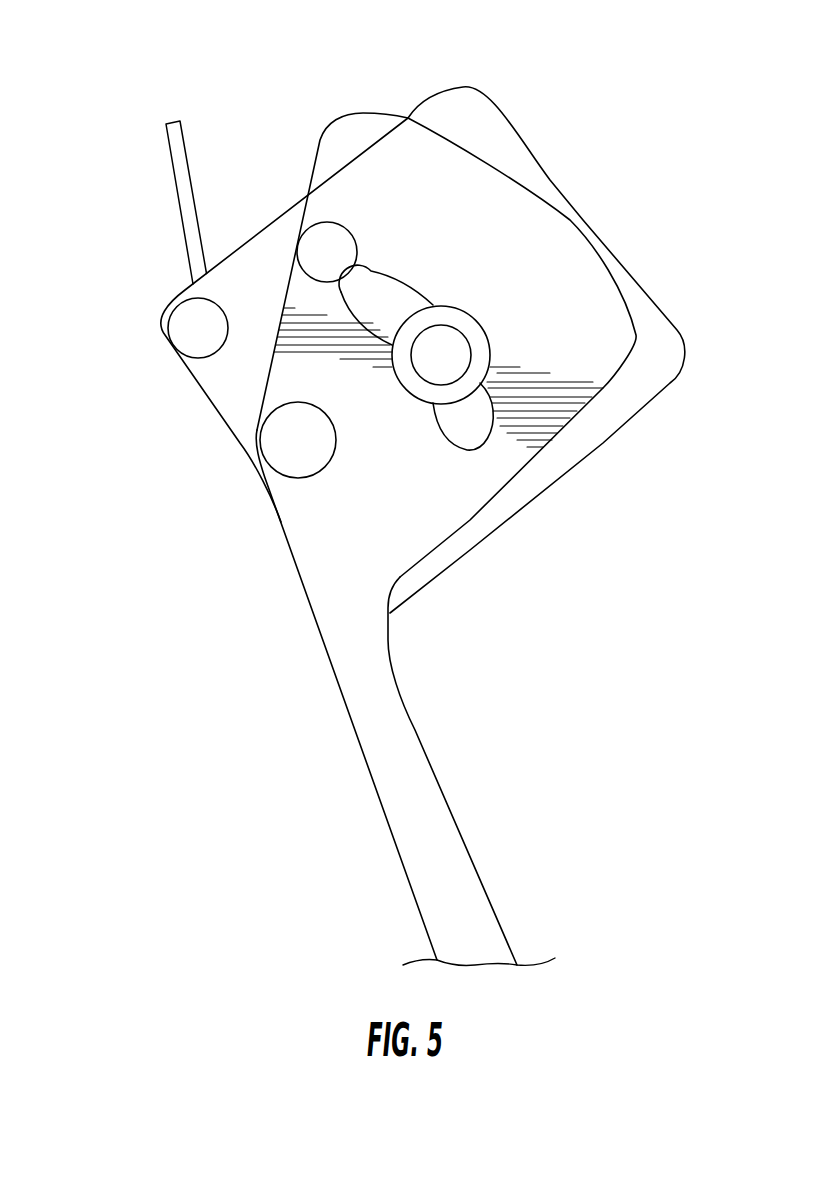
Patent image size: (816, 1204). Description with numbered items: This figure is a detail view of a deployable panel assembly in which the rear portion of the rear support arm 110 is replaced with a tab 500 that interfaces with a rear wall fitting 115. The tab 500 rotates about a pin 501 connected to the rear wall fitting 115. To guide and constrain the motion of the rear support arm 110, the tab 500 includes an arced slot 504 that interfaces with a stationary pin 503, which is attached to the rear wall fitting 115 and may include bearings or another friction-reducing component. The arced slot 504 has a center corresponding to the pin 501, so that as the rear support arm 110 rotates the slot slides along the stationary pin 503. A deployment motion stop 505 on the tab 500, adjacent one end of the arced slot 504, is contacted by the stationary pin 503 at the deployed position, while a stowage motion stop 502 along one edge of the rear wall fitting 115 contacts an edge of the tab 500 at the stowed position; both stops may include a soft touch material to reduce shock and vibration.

The rear support arm 110 is at (453, 875).
The rear wall fitting 115 is at (437, 97).
The tab 500 is at (542, 295).
The pin 501 is at (283, 437).
The stowage motion stop 502 is at (193, 330).
The stationary pin 503 is at (478, 364).
The arced slot 504 is at (380, 297).
The deployment motion stop 505 is at (315, 250).